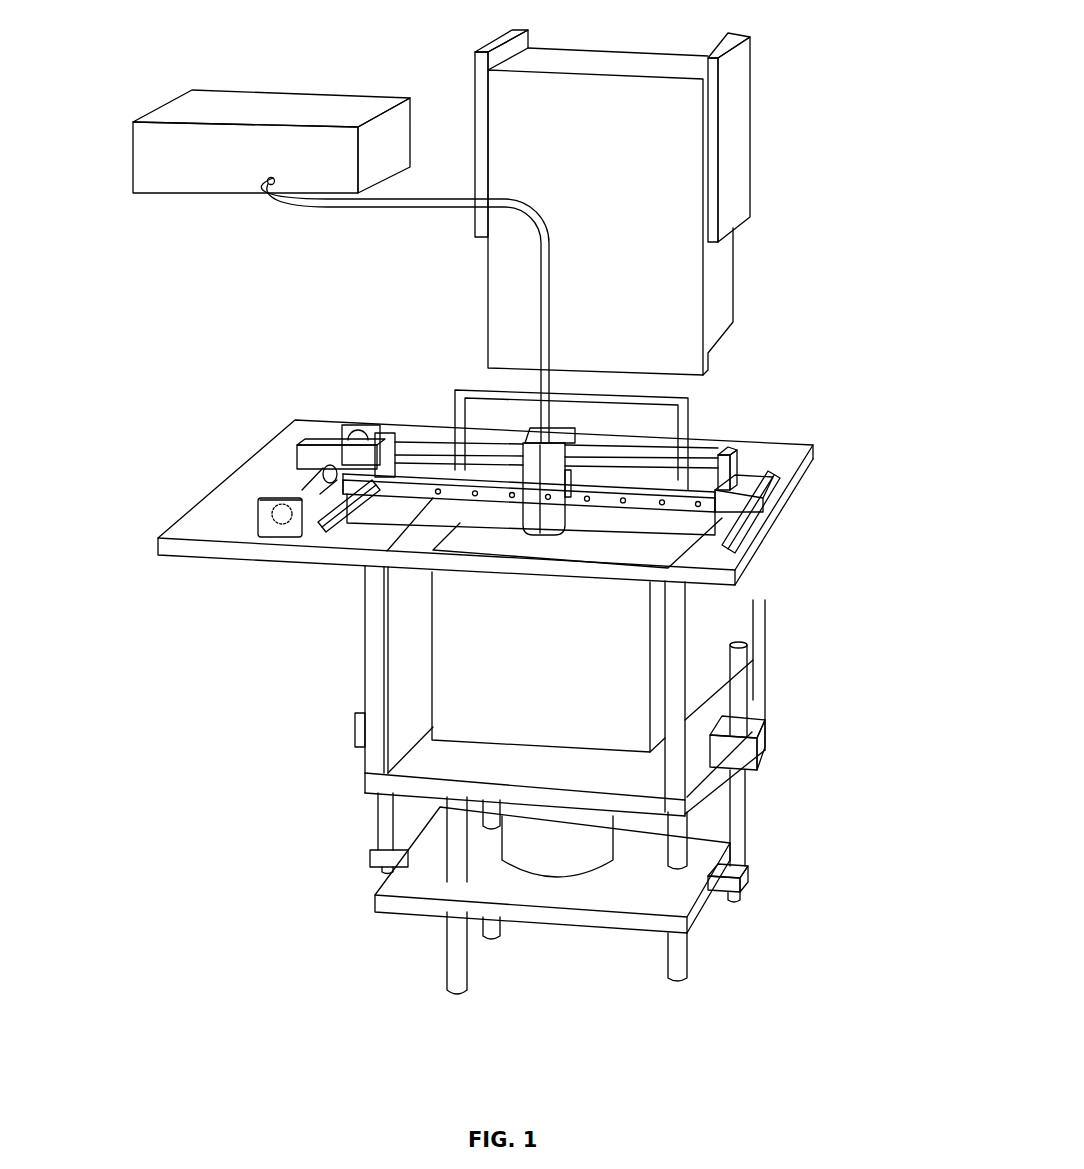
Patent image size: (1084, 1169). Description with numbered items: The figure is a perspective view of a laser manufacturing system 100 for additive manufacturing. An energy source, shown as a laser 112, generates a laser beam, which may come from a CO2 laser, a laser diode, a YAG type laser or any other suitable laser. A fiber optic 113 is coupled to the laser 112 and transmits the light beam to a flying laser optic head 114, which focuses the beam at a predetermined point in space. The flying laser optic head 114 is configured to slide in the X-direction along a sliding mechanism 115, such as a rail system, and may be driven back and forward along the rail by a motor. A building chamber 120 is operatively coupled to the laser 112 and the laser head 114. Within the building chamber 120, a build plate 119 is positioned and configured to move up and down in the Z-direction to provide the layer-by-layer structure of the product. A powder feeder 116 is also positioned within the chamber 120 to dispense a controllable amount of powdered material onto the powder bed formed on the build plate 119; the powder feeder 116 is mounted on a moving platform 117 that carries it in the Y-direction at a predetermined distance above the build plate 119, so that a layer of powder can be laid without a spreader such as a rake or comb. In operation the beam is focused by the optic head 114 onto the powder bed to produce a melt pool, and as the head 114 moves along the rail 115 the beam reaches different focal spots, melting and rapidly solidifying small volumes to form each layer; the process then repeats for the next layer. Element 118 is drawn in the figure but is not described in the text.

The laser manufacturing system 100 is at (864, 36).
The laser 112 is at (155, 171).
The fiber optic 113 is at (418, 206).
The flying laser optic head 114 is at (530, 466).
The sliding mechanism 115 is at (415, 492).
The powder feeder 116 is at (694, 420).
The moving platform 117 is at (272, 512).
The reservoir tank 118 is at (717, 266).
The build plate 119 is at (616, 548).
The building chamber 120 is at (622, 727).